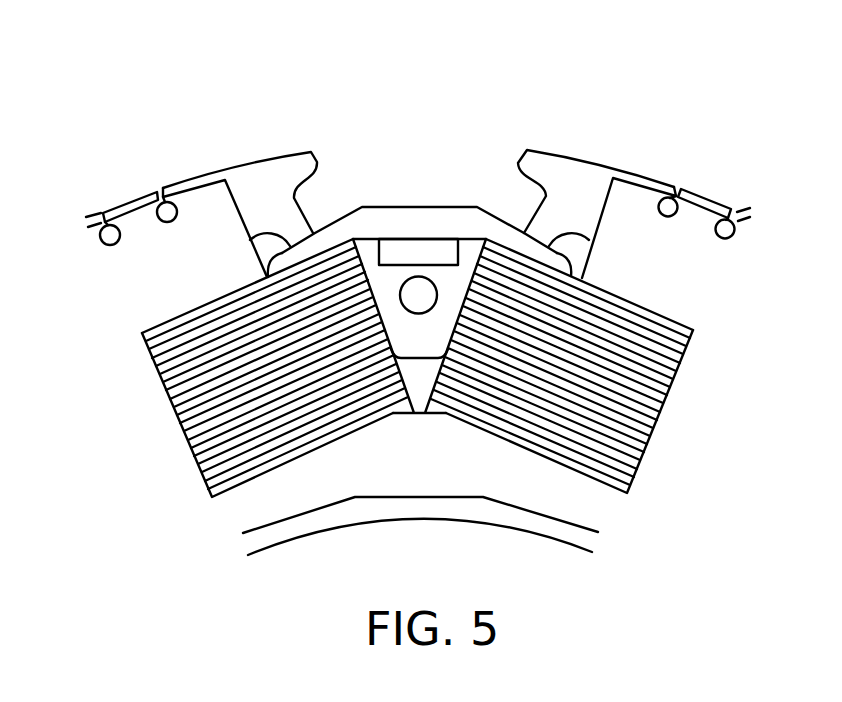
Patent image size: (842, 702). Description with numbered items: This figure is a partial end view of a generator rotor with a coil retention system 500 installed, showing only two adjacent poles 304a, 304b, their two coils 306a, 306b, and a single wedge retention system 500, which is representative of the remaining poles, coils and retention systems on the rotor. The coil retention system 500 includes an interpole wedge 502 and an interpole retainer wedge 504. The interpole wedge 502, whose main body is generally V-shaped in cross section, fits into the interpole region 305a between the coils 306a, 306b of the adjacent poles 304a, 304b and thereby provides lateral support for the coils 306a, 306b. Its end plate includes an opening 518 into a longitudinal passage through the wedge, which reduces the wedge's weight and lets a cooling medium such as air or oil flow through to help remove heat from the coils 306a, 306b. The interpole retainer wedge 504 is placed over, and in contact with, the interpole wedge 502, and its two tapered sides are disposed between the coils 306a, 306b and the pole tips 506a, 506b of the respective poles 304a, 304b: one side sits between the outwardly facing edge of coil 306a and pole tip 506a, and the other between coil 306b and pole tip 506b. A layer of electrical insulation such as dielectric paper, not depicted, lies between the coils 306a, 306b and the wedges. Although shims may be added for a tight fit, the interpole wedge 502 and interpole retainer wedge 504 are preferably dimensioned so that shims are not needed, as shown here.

The coil retention system 500 is at (428, 135).
The interpole wedge 502 is at (424, 358).
The interpole retainer wedge 504 is at (361, 207).
The interpole region 305a is at (483, 166).
The pole 304a is at (267, 160).
The pole 304b is at (569, 157).
The coil 306a is at (142, 333).
The coil 306b is at (694, 328).
The pole tip 506a is at (250, 240).
The pole tip 506b is at (588, 241).
The opening 518 is at (417, 290).